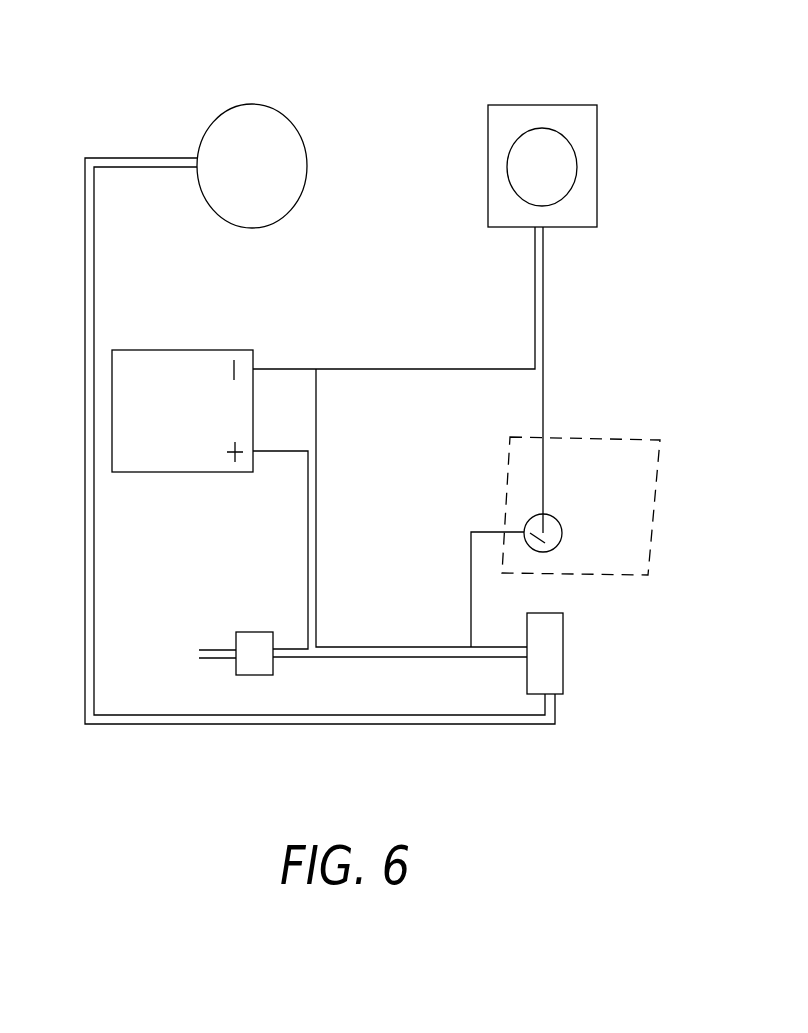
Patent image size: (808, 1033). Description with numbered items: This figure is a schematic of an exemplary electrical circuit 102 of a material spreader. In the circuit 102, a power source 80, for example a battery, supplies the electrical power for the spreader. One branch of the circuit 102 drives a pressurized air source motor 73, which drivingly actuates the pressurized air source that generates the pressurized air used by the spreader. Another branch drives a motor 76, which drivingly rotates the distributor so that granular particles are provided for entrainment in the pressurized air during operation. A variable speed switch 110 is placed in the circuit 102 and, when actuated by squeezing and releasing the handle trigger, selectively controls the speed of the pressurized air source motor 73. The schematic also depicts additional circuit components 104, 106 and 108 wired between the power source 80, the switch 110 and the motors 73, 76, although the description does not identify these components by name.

The electrical circuit 102 is at (673, 75).
The pressurized air source motor 73 is at (272, 189).
The motor 76 is at (560, 187).
The power source 80 is at (185, 422).
The switch 104 is at (253, 632).
The relay 106 is at (563, 518).
The controller 108 is at (575, 435).
The variable speed switch 110 is at (563, 623).